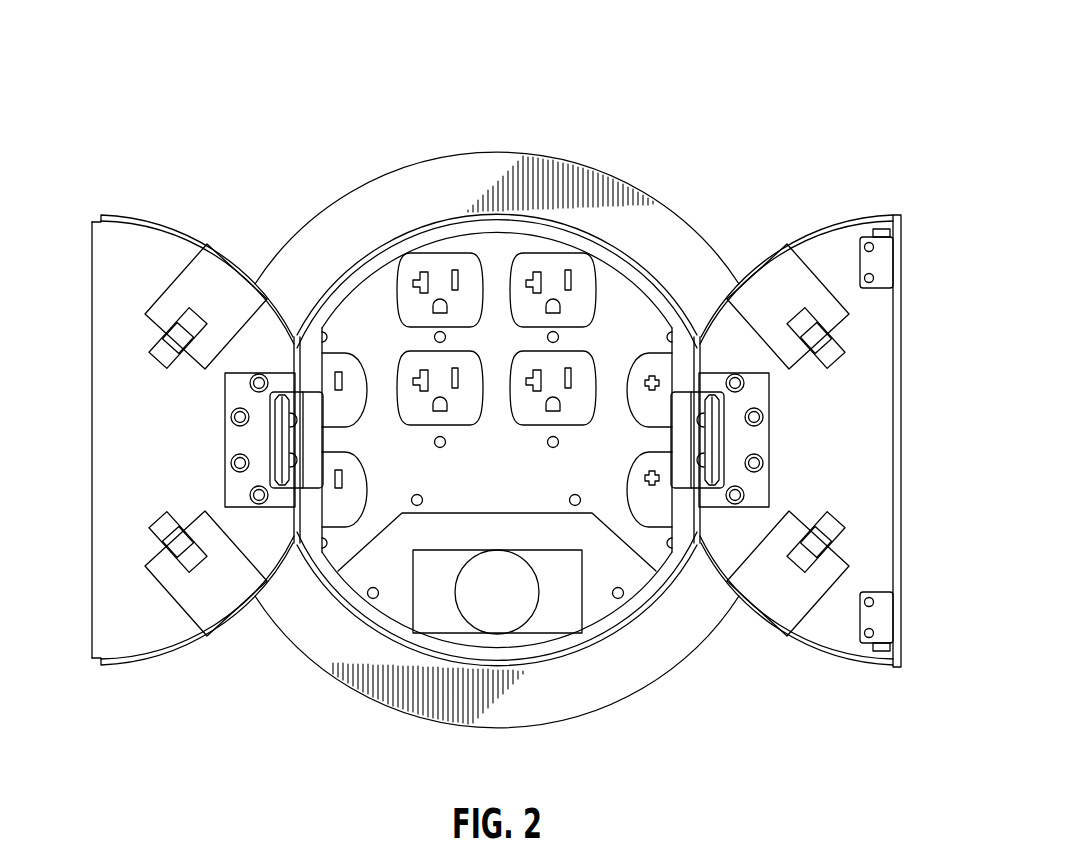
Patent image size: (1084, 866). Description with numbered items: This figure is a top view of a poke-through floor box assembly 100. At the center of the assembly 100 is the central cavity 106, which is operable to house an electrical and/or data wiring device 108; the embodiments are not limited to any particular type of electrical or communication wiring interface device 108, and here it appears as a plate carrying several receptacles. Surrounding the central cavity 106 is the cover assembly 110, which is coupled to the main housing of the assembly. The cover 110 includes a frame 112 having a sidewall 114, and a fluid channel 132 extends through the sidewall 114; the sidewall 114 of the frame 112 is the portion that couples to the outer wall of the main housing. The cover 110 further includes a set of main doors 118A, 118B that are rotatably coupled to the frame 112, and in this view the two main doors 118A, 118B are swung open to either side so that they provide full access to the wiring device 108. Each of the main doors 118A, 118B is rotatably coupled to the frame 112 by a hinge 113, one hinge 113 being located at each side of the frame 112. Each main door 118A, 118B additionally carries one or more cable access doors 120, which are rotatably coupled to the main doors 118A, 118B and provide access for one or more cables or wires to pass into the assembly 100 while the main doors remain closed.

The poke-through floor box assembly 100 is at (724, 88).
The central cavity 106 is at (373, 303).
The electrical and/or data wiring device 108 is at (629, 308).
The cover assembly 110 is at (731, 637).
The frame 112 is at (413, 678).
The hinge 113 is at (282, 370).
The sidewall 114 is at (474, 228).
The main door 118A is at (862, 413).
The main door 118B is at (117, 433).
The cable access door 120 is at (770, 285).
The fluid channel 132 is at (318, 485).